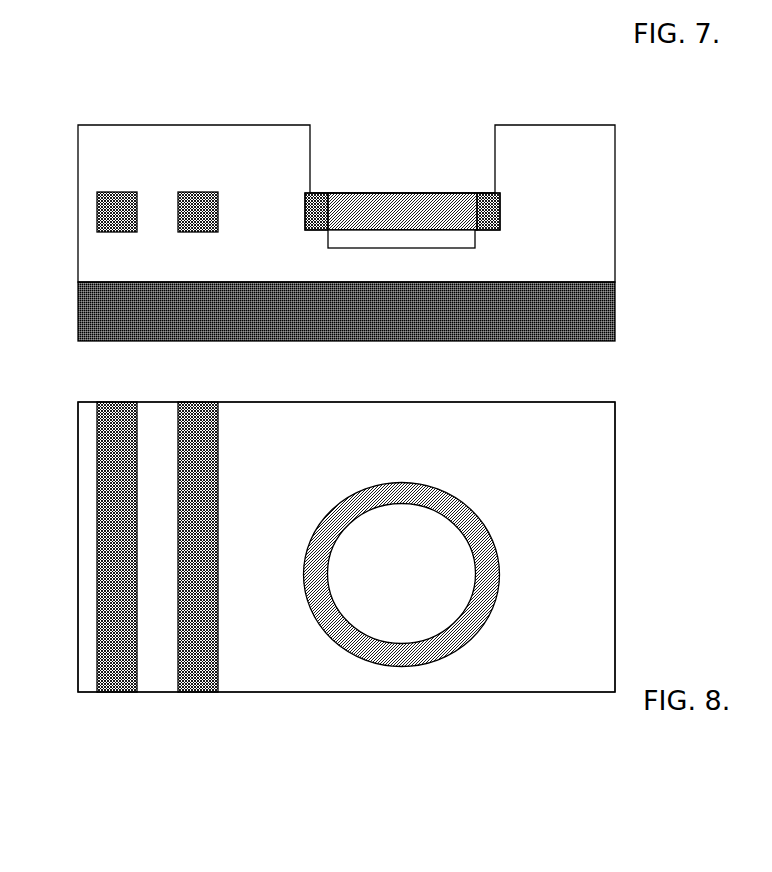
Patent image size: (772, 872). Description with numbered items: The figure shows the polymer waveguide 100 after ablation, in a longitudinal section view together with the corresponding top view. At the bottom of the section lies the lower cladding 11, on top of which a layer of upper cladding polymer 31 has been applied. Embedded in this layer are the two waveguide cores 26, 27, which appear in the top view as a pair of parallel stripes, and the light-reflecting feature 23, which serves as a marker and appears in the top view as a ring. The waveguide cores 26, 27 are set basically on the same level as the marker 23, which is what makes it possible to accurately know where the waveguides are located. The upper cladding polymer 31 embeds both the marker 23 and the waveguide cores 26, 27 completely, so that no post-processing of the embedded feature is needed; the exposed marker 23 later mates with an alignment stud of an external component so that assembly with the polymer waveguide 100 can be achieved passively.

In FIG. 7, the lower cladding 11 is at (595, 320).
In FIG. 7, the light-reflecting feature 23 is at (452, 213).
In FIG. 8, the light-reflecting feature 23 is at (447, 635).
In FIG. 7, the waveguide core 26 is at (200, 212).
In FIG. 8, the waveguide core 26 is at (188, 665).
In FIG. 7, the waveguide core 27 is at (118, 212).
In FIG. 8, the waveguide core 27 is at (99, 676).
In FIG. 7, the upper cladding polymer 31 is at (556, 205).
In FIG. 8, the upper cladding polymer 31 is at (508, 467).
In FIG. 8, the polymer waveguide 100 is at (328, 730).